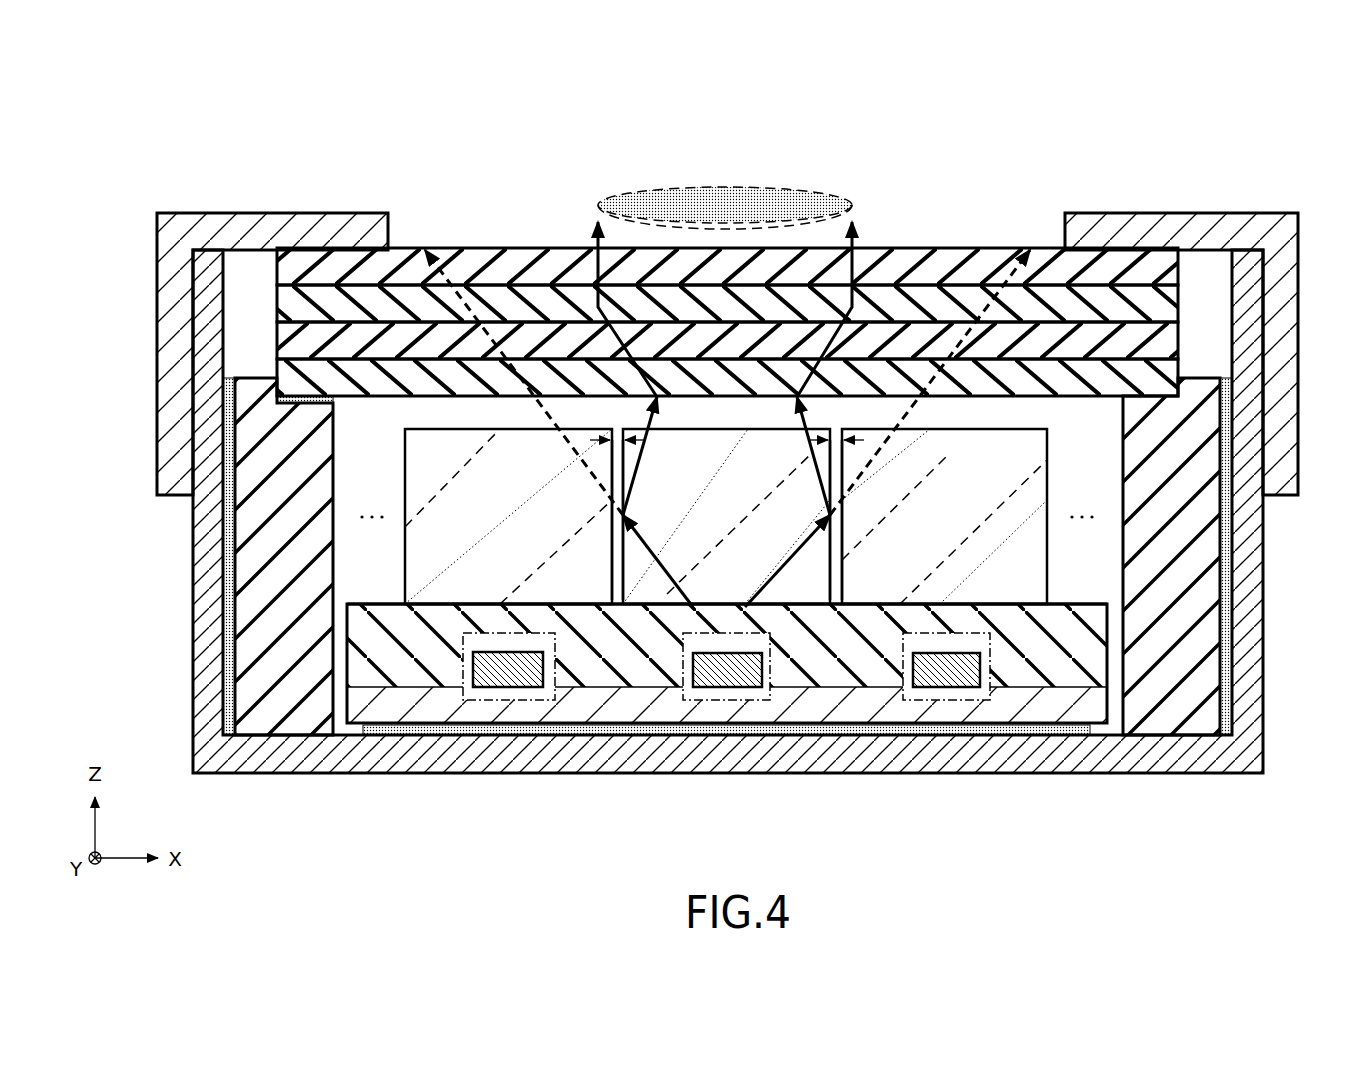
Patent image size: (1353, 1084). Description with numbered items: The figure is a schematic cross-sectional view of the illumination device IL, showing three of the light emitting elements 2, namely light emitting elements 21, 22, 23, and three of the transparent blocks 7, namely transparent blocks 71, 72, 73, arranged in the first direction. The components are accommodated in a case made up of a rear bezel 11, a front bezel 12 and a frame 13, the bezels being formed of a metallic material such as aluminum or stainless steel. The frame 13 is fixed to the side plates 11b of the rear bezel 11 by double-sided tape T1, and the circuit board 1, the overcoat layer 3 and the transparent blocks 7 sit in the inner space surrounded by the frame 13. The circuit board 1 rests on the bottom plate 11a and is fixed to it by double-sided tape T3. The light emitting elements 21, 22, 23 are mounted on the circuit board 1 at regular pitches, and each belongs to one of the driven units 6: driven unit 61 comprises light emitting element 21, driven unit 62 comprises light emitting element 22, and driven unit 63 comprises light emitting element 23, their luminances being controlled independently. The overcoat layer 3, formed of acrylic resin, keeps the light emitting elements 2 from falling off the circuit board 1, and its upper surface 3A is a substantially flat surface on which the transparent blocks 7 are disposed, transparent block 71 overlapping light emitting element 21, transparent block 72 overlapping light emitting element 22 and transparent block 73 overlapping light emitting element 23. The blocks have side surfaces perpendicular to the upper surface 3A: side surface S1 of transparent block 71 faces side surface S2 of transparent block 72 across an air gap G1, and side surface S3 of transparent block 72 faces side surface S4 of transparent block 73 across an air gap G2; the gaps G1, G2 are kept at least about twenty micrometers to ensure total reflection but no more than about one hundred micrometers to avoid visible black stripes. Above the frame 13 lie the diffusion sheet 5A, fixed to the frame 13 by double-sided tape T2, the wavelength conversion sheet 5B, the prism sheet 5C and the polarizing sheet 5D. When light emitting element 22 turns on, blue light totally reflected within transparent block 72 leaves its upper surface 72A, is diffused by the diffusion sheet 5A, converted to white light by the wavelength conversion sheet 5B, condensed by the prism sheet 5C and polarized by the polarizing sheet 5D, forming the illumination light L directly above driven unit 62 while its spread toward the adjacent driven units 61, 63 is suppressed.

The circuit board 1 is at (745, 521).
The light emitting elements 2 is at (723, 748).
The overcoat layer 3 is at (728, 694).
The upper surface of the overcoat layer 3A is at (1012, 597).
The diffusion sheet 5A is at (355, 375).
The wavelength conversion sheet 5B is at (388, 340).
The prism sheet 5C is at (408, 303).
The polarizing sheet 5D is at (468, 268).
The driven units 6 is at (732, 745).
The transparent blocks 7 is at (724, 502).
The rear bezel 11 is at (729, 540).
The bottom plate 11a is at (343, 774).
The side plates 11b is at (200, 649).
The front bezel 12 is at (160, 213).
The frame 13 is at (275, 716).
The light emitting element 21 is at (500, 681).
The light emitting element 22 is at (718, 673).
The light emitting element 23 is at (935, 673).
The driven unit 61 is at (525, 701).
The driven unit 62 is at (750, 701).
The driven unit 63 is at (970, 701).
The transparent block 71 is at (406, 431).
The transparent block 72 is at (735, 431).
The upper surface of the transparent block 72A is at (750, 424).
The transparent block 73 is at (1047, 431).
The gap G1 is at (612, 437).
The gap G2 is at (842, 437).
The illumination device IL is at (1168, 129).
The illumination light L is at (800, 186).
The side surface S1 is at (621, 560).
The side surface S2 is at (610, 589).
The side surface S3 is at (844, 589).
The side surface S4 is at (832, 560).
The double-sided tape T1 is at (226, 591).
The double-sided tape T2 is at (292, 397).
The double-sided tape T3 is at (418, 736).